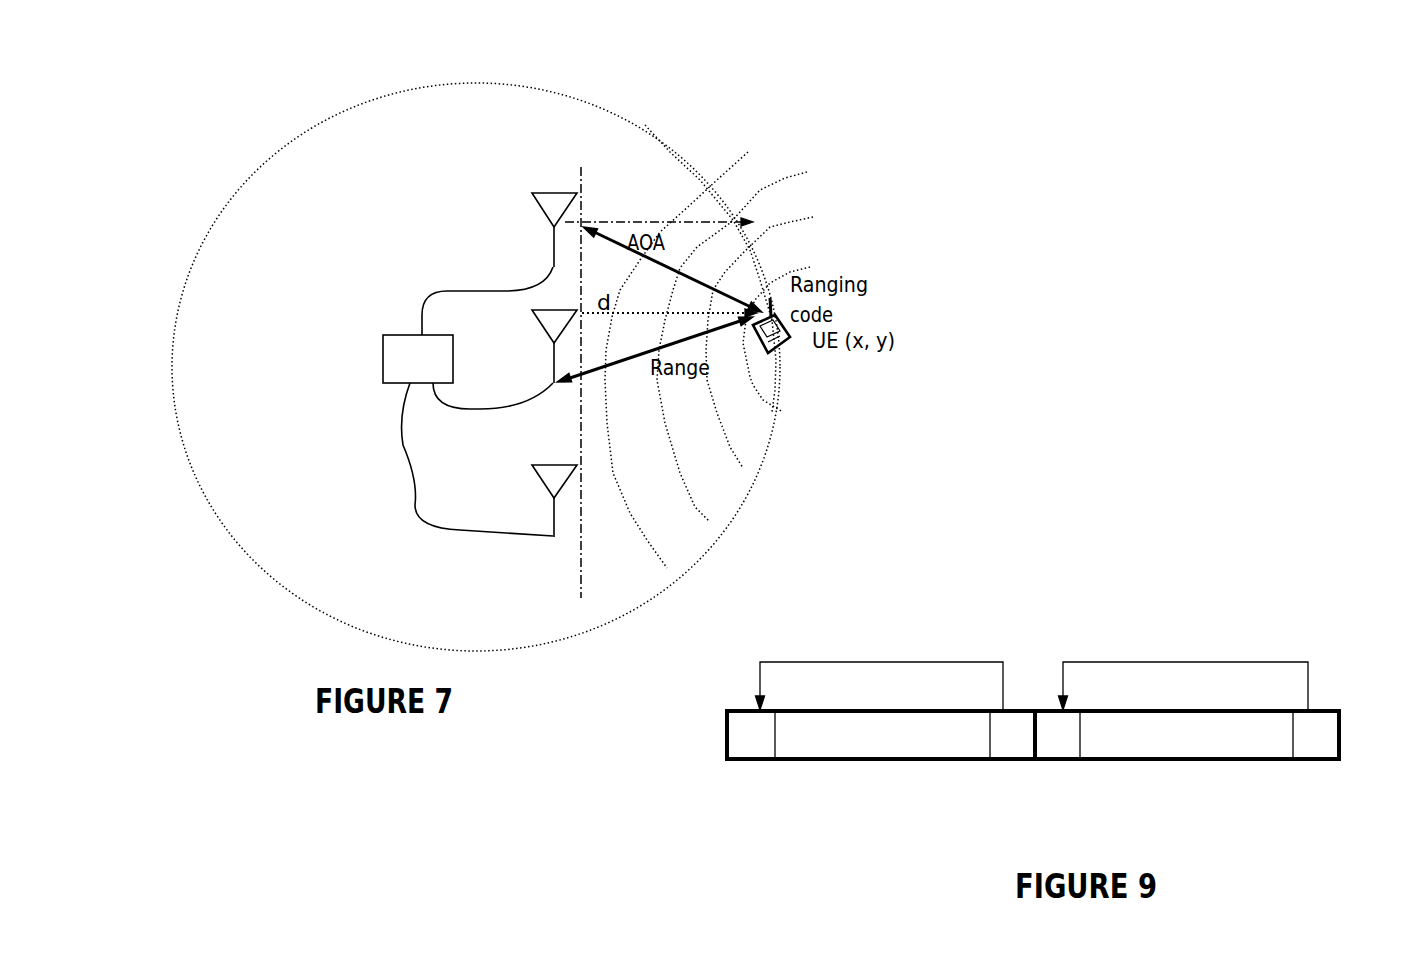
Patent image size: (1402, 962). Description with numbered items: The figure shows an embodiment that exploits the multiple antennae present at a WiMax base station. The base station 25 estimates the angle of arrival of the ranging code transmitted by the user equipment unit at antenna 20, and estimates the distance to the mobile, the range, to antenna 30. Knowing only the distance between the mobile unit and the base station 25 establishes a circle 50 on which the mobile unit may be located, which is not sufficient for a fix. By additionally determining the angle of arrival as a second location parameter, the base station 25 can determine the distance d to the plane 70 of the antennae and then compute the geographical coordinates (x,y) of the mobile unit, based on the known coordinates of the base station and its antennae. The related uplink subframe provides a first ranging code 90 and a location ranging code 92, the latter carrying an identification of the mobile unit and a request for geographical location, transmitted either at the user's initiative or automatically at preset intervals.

In FIG. 7, the antenna 20 is at (532, 203).
In FIG. 7, the BTS 25 is at (383, 353).
In FIG. 7, the antenna 30 is at (543, 318).
In FIG. 7, the circle 50 is at (300, 593).
In FIG. 7, the plane of the antennae 70 is at (580, 175).
In FIG. 9, the first ranging code 90 is at (775, 760).
In FIG. 9, the location ranging code 92 is at (1287, 760).